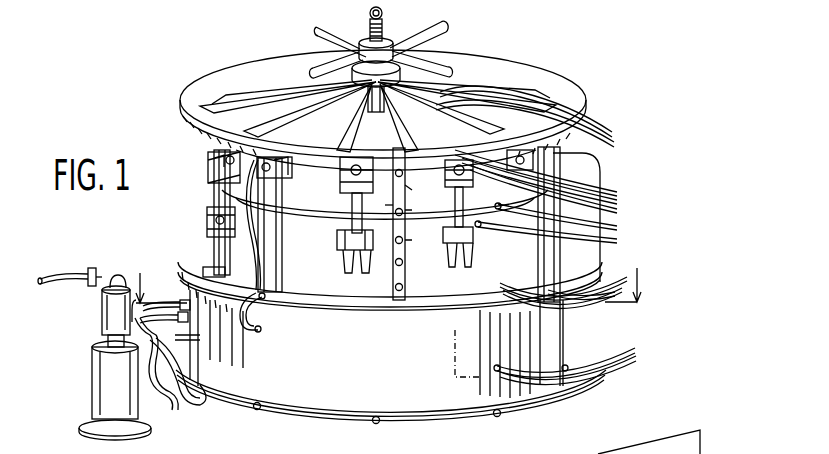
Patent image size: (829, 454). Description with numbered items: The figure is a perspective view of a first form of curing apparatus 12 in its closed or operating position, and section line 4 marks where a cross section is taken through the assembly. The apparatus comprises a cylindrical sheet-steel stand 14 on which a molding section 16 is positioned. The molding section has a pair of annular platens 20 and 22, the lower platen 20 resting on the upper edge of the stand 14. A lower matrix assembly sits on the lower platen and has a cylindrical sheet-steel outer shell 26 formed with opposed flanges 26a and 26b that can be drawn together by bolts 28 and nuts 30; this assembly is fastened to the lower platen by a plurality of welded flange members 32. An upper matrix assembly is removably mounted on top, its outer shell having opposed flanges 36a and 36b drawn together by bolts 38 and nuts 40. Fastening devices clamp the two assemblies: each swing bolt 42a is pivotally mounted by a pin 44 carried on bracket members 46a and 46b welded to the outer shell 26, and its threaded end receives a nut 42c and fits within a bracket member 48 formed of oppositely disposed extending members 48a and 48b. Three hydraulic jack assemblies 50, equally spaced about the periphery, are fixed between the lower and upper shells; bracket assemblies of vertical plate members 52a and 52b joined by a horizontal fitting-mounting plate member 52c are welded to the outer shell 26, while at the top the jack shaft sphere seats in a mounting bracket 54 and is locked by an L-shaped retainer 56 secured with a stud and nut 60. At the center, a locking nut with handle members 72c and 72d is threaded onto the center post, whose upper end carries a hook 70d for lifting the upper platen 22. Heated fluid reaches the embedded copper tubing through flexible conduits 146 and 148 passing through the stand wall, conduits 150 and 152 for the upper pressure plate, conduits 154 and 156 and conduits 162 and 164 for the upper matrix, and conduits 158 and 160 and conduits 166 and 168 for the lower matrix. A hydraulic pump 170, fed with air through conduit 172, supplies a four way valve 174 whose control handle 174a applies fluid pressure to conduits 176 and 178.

The curing apparatus 12 is at (545, 48).
The stand 14 is at (408, 376).
The molding section 16 is at (208, 174).
The lower platen 20 is at (325, 318).
The upper platen 22 is at (555, 88).
The outer shell 26 is at (455, 300).
The flange 26a is at (393, 284).
The flange 26b is at (406, 272).
The bolt 28 is at (393, 291).
The nut 30 is at (406, 291).
The flange member 32 is at (216, 248).
The flange 36a is at (392, 200).
The flange 36b is at (405, 192).
The bolt 38 is at (393, 215).
The nut 40 is at (412, 210).
The swing bolt 42a is at (350, 212).
The nut 42c is at (348, 156).
The pin 44 is at (337, 241).
The bracket member 46a is at (343, 258).
The bracket member 46b is at (364, 262).
The bracket member 48 is at (342, 158).
The extending member 48a is at (340, 180).
The extending member 48b is at (447, 168).
The hydraulic jack assembly 50 is at (556, 174).
The plate member 52a is at (264, 256).
The plate member 52b is at (280, 297).
The fitting-mounting plate member 52c is at (262, 332).
The mounting bracket 54 is at (302, 147).
The retainer 56 is at (270, 157).
The nut 60 is at (228, 150).
The hook 70d is at (384, 13).
The handle member 72c is at (328, 48).
The handle member 72d is at (450, 27).
The flexible conduit 146 is at (633, 362).
The flexible conduit 148 is at (620, 352).
The conduit 150 is at (602, 128).
The conduit 152 is at (614, 144).
The conduit 154 is at (617, 194).
The conduit 156 is at (617, 228).
The conduit 158 is at (617, 241).
The conduit 160 is at (606, 300).
The conduit 162 is at (617, 202).
The conduit 164 is at (617, 211).
The conduit 166 is at (625, 288).
The conduit 168 is at (590, 303).
The hydraulic pump 170 is at (79, 375).
The conduit 172 is at (56, 274).
The four way valve 174 is at (172, 300).
The control handle 174a is at (172, 296).
The conduit 176 is at (210, 410).
The conduit 178 is at (166, 410).
The section line 4- 4 is at (386, 275).